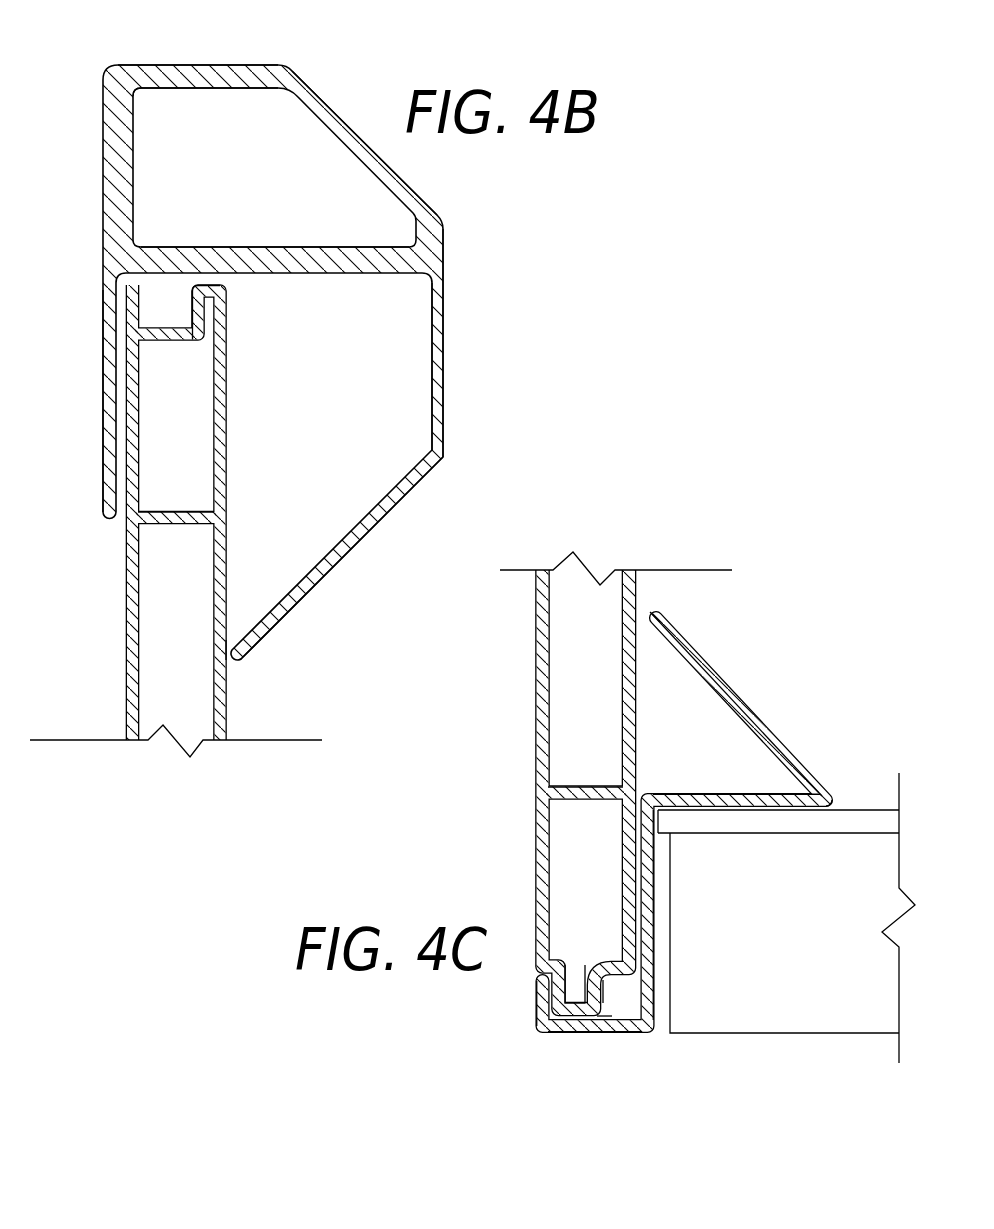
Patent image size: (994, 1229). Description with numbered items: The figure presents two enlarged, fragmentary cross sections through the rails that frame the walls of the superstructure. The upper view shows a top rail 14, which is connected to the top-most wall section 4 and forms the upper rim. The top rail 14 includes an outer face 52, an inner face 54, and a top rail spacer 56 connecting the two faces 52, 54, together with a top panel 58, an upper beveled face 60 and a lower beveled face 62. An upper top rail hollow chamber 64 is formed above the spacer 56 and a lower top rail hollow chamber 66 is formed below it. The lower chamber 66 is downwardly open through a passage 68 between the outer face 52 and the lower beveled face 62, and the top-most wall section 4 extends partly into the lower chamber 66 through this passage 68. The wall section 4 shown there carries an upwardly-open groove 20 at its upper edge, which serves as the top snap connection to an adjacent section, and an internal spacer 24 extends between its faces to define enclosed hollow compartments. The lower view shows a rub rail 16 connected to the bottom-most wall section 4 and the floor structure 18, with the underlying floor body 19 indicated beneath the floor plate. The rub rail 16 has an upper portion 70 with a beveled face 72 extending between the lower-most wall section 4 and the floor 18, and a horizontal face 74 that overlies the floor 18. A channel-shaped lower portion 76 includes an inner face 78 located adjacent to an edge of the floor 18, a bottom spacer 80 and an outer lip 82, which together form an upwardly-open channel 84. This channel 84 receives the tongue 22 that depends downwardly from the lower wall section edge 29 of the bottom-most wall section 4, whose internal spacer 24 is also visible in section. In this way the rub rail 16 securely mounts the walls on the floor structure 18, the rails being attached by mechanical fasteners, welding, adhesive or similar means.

In FIG. 4B, the wall section 4 is at (128, 632).
In FIG. 4C, the wall section 4 is at (538, 772).
In FIG. 4B, the top rail 14 is at (115, 72).
In FIG. 4C, the rub rail 16 is at (650, 609).
In FIG. 4C, the floor structure 18 is at (852, 834).
In FIG. 4C, the body 19 is at (786, 952).
In FIG. 4B, the groove 20 is at (205, 302).
In FIG. 4C, the tongue 22 is at (575, 995).
In FIG. 4B, the internal spacer 24 is at (180, 512).
In FIG. 4C, the internal spacer 24 is at (597, 788).
In FIG. 4C, the lower wall section edge 29 is at (602, 1018).
In FIG. 4B, the outer face 52 is at (103, 378).
In FIG. 4B, the inner face 54 is at (445, 350).
In FIG. 4B, the top rail spacer 56 is at (187, 258).
In FIG. 4B, the top panel 58 is at (172, 65).
In FIG. 4B, the upper beveled face 60 is at (392, 172).
In FIG. 4B, the lower beveled face 62 is at (355, 548).
In FIG. 4B, the upper top rail hollow chamber 64 is at (133, 168).
In FIG. 4B, the lower top rail hollow chamber 66 is at (432, 408).
In FIG. 4B, the passage 68 is at (232, 650).
In FIG. 4C, the upper portion 70 is at (752, 708).
In FIG. 4C, the beveled face 72 is at (835, 796).
In FIG. 4C, the horizontal face 74 is at (762, 793).
In FIG. 4C, the channel-shaped lower portion 76 is at (640, 1033).
In FIG. 4C, the inner face 78 is at (655, 923).
In FIG. 4C, the bottom spacer 80 is at (597, 1030).
In FIG. 4C, the outer lip 82 is at (535, 1003).
In FIG. 4C, the channel 84 is at (605, 1020).